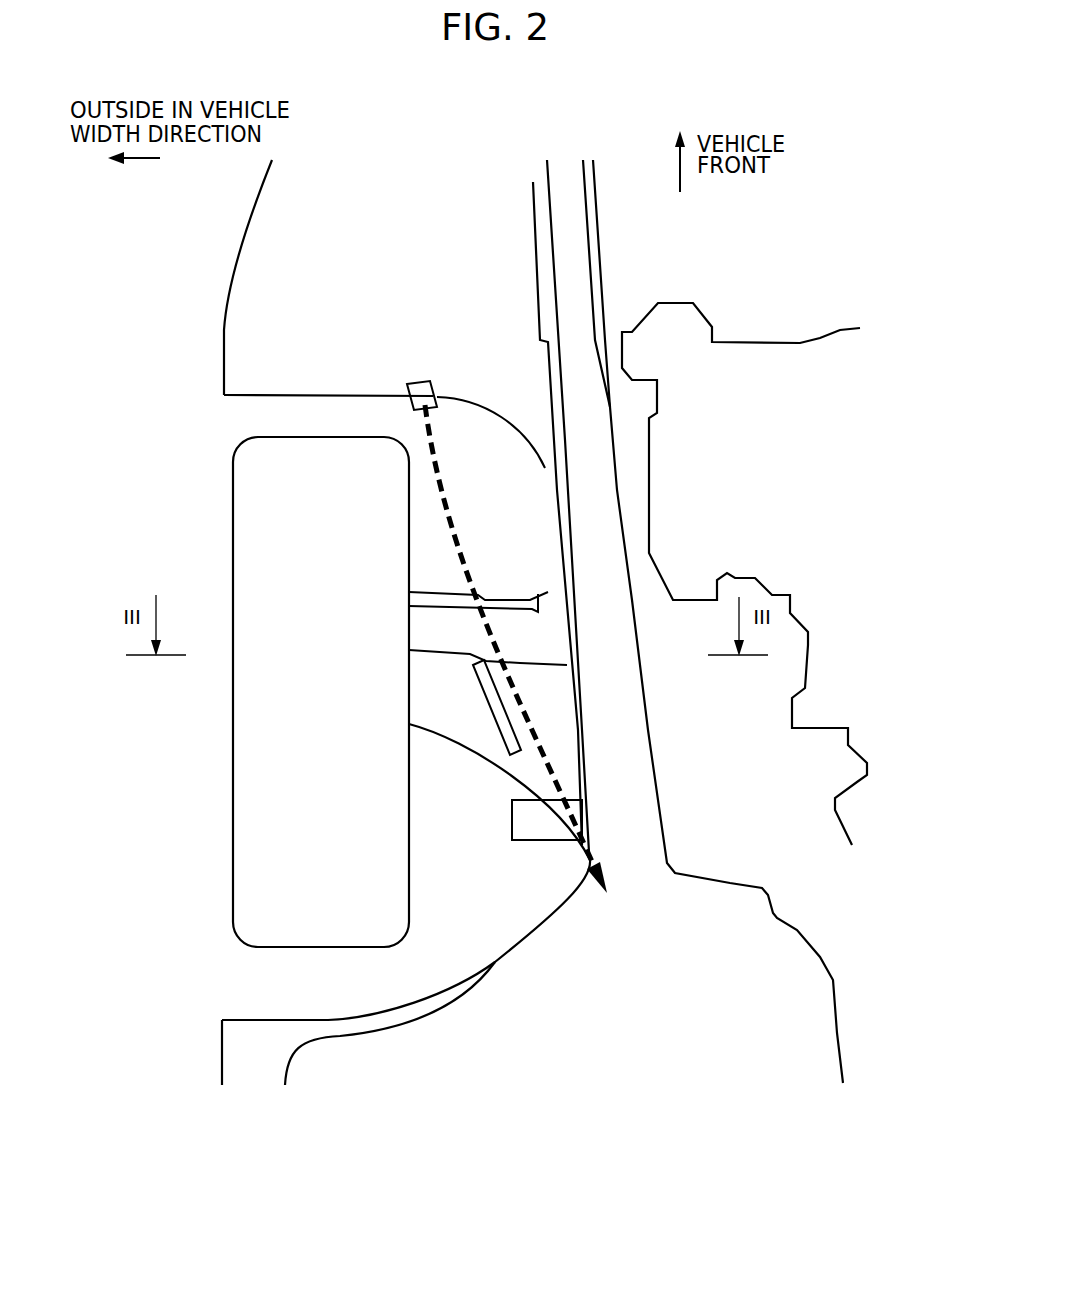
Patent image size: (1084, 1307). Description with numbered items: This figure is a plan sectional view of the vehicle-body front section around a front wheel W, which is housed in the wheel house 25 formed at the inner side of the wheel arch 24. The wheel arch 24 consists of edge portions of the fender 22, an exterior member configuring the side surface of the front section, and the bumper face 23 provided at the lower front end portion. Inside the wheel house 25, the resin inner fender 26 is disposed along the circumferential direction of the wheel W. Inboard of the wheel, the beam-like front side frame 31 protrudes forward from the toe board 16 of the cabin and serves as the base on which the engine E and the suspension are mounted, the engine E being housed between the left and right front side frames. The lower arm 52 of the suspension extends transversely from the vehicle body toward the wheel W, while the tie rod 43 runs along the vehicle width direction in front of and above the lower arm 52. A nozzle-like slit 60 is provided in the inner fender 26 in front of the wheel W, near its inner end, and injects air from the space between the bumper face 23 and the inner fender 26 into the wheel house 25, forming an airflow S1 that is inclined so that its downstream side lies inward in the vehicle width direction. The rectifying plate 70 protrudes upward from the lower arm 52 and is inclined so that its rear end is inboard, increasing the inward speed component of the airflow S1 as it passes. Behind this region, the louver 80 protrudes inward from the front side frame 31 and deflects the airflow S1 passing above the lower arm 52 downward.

The toe board 16 is at (495, 962).
The fender 22 is at (222, 1053).
The bumper face 23 is at (223, 322).
The wheel arch 24 is at (222, 1021).
The wheel house 25 is at (452, 917).
The inner fender 26 is at (347, 395).
The front side frame 31 is at (607, 480).
The tie rod 43 is at (540, 593).
The lower arm 52 is at (563, 683).
The slit 60 is at (430, 383).
The rectifying plate 70 is at (493, 717).
The louver 80 is at (548, 838).
The engine E is at (818, 338).
The wheel W is at (233, 500).
The airflow S1 is at (516, 649).